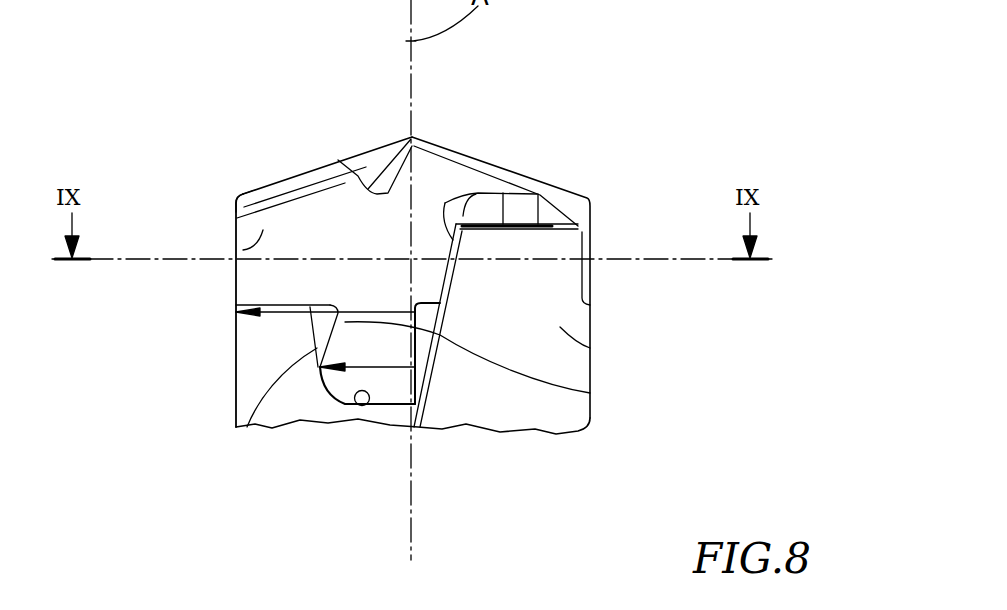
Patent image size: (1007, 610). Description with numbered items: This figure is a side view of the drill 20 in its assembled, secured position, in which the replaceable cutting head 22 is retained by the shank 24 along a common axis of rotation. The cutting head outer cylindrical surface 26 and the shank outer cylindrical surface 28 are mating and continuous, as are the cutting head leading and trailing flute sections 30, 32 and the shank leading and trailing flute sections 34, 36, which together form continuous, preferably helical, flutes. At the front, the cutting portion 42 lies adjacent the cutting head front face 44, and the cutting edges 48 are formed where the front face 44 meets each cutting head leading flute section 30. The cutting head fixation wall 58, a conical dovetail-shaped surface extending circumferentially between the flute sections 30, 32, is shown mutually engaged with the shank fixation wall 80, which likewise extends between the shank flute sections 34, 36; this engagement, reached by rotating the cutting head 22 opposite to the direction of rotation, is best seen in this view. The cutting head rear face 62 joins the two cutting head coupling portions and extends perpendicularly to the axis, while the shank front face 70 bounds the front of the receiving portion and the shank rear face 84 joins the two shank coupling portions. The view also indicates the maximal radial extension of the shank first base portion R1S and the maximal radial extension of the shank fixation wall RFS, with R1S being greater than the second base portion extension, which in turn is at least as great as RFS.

The drill 20 is at (740, 114).
The replaceable cutting head 22 is at (262, 270).
The shank 24 is at (525, 395).
The cutting head outer cylindrical surface 26 is at (583, 240).
The shank outer cylindrical surface 28 is at (590, 348).
The cutting head leading flute section 30 is at (243, 250).
The cutting head trailing flute section 32 is at (420, 230).
The shank leading flute section 34 is at (257, 367).
The shank trailing flute section 36 is at (452, 200).
The cutting portion 42 is at (308, 145).
The cutting head front face 44 is at (567, 171).
The cutting edges 48 is at (255, 190).
The cutting head fixation wall 58 is at (590, 393).
The cutting head rear face 62 is at (390, 385).
The shank front face 70 is at (533, 196).
The shank fixation wall 80 is at (236, 427).
The shank rear face 84 is at (372, 404).
The maximal radial extension of the shank first base portion R1S is at (293, 311).
The maximal radial extension of the shank fixation wall RFS is at (340, 378).